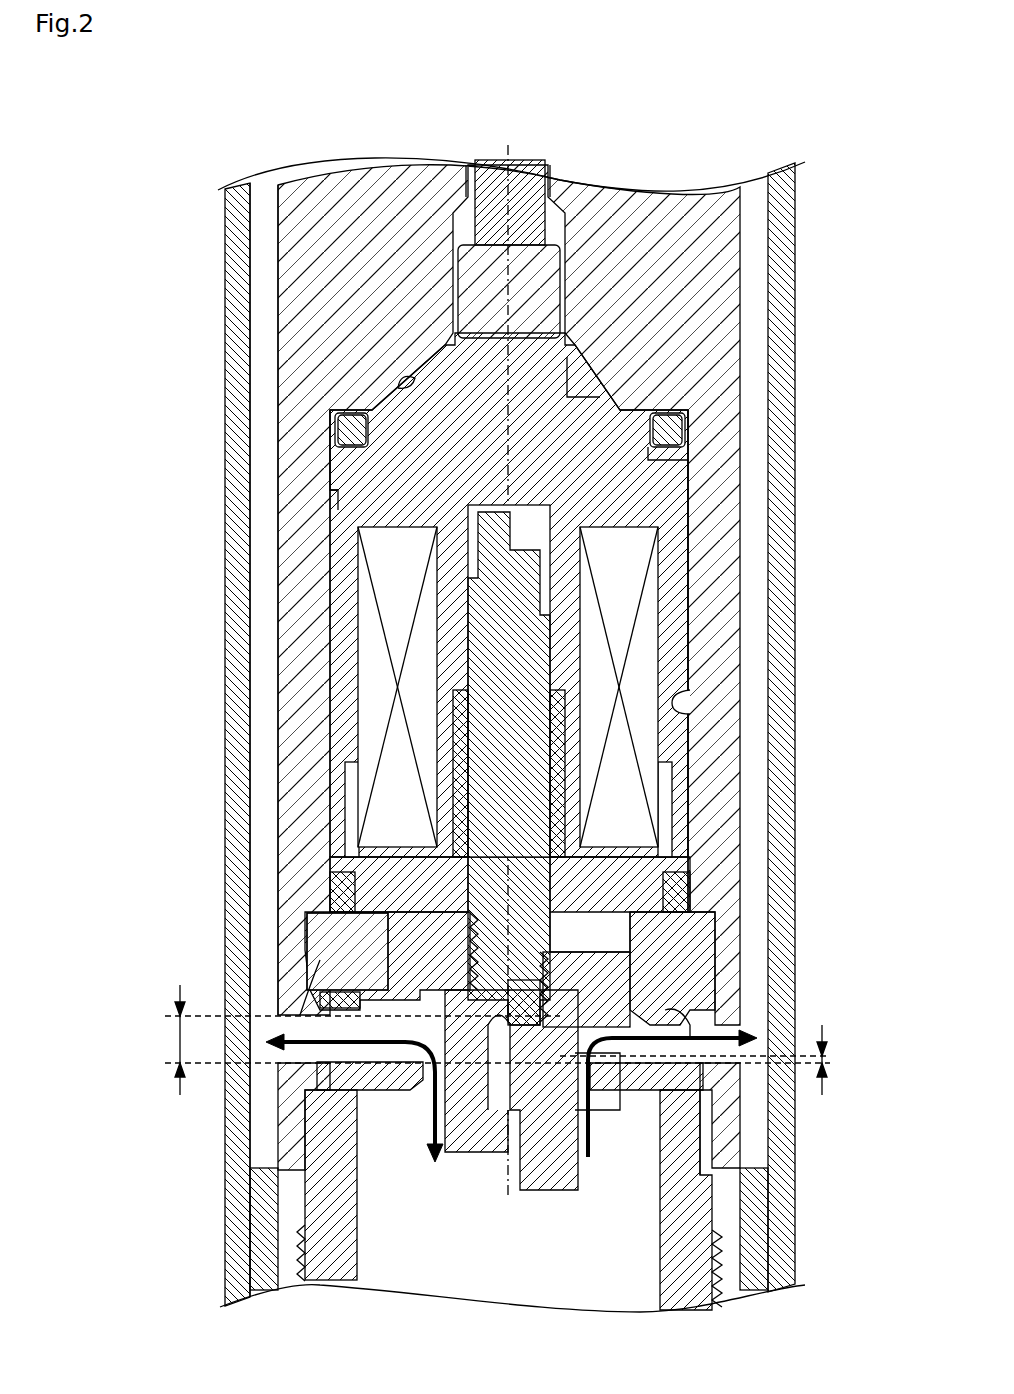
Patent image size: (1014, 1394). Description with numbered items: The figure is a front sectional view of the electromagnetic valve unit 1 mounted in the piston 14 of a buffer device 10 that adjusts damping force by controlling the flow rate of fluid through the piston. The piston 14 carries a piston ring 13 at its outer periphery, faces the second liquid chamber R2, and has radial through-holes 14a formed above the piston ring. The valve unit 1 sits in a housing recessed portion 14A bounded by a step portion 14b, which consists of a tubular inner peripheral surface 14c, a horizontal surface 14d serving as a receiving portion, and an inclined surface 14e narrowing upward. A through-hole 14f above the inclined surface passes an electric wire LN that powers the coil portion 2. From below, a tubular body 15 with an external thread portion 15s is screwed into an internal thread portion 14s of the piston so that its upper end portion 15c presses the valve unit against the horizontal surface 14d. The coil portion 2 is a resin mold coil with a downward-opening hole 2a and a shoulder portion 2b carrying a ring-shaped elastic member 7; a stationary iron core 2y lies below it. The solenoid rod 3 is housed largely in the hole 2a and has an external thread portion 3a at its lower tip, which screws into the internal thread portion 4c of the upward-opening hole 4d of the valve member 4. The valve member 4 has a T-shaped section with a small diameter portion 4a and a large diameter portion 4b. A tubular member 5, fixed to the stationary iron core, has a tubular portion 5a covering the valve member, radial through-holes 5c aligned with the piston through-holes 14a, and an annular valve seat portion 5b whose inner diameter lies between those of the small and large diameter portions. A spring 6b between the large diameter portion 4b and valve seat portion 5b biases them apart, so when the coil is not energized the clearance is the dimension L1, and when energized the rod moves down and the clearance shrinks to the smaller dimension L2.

The buffer device 10 is at (826, 180).
The piston 14 is at (700, 258).
The second liquid chamber R2 is at (265, 243).
The electric wire LN is at (525, 185).
The through-hole 14f is at (572, 213).
The inclined surface 14e is at (405, 385).
The step portion 14b is at (148, 338).
The horizontal surface 14d is at (352, 432).
The inner peripheral surface 14c is at (345, 488).
The elastic member 7 is at (668, 430).
The shoulder portion 2b is at (683, 440).
The hole 2a is at (483, 660).
The electromagnetic valve unit 1 is at (708, 627).
The housing recessed portion 14A is at (685, 703).
The coil portion 2 is at (345, 730).
The solenoid rod 3 is at (490, 778).
The stationary iron core 2y is at (330, 848).
The valve member 4 is at (148, 893).
The large diameter portion 4b is at (420, 945).
The small diameter portion 4a is at (338, 1010).
The tubular portion 5a is at (690, 945).
The tubular member 5 is at (728, 960).
The external thread portion 3a is at (540, 970).
The through-holes 5c is at (670, 1022).
The dimension L1 is at (487, 1040).
The dimension L2 is at (716, 1060).
The through-holes 14a is at (292, 1062).
The upper end portion 15c is at (430, 1080).
The spring 6b is at (690, 1065).
The valve seat portion 5b is at (615, 1100).
The hole 4d is at (490, 1170).
The internal thread portion 4c is at (525, 1080).
The tubular body 15 is at (690, 1212).
The external thread portion 15s is at (720, 1238).
The internal thread portion 14s is at (775, 1270).
The piston ring 13 is at (266, 1268).